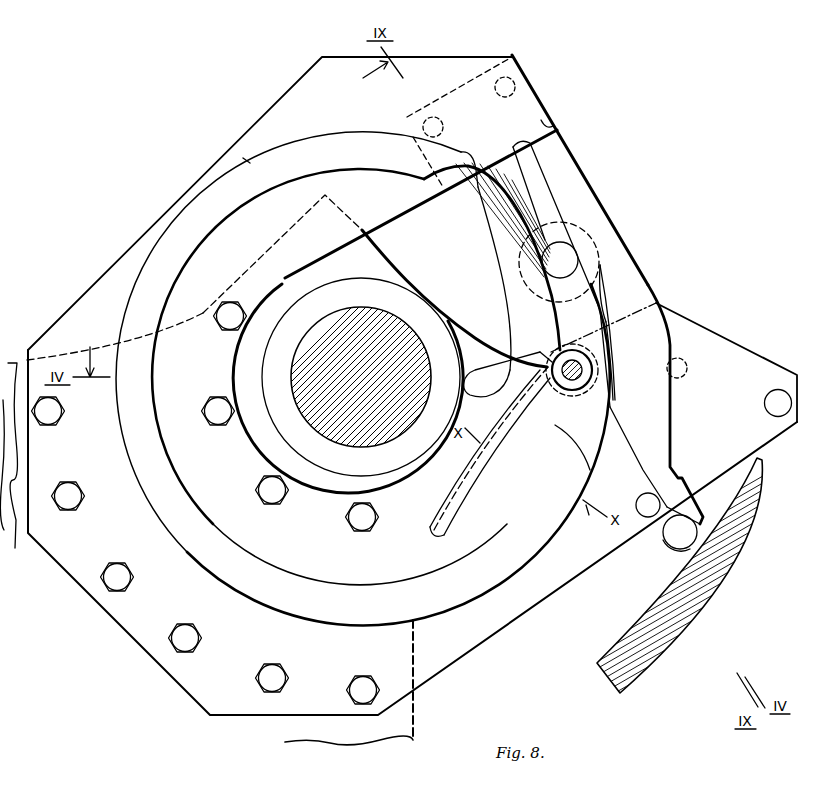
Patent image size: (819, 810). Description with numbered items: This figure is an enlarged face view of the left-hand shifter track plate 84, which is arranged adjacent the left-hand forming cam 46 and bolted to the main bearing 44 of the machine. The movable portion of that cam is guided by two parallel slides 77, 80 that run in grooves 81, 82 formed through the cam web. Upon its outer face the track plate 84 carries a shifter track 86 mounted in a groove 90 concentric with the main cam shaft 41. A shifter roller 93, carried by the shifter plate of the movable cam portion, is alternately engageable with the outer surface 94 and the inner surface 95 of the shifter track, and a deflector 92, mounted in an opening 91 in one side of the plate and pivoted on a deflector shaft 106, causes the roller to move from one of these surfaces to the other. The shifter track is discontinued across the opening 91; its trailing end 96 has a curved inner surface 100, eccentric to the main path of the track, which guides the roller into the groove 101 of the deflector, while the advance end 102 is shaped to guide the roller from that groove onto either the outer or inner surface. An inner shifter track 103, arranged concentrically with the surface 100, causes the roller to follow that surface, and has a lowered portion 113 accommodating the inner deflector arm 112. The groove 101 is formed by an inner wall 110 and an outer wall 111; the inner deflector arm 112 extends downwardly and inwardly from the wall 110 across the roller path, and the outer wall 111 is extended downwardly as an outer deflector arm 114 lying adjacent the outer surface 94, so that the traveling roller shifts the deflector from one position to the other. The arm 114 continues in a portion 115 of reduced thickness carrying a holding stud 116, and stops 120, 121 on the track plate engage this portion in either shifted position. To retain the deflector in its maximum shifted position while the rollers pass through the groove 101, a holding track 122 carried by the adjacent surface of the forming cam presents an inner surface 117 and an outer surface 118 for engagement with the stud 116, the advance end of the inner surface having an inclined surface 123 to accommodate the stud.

The main cam shaft 41 is at (365, 308).
The main bearing 44 is at (362, 250).
The left-hand forming cam 46 is at (13, 377).
The slide 77 is at (9, 497).
The slide 80 is at (0, 322).
The groove 81 is at (9, 518).
The groove 82 is at (0, 302).
The track plate 84 is at (262, 120).
The shifter track 86 is at (193, 207).
The groove 90 is at (415, 172).
The opening 91 is at (547, 125).
The deflector 92 is at (618, 217).
The shifter roller 93 is at (580, 365).
The outer surface 94 is at (243, 158).
The inner surface 95 is at (233, 205).
The trailing end 96 is at (610, 385).
The curved inner surface 100 is at (580, 458).
The groove 101 is at (583, 278).
The advance end 102 is at (457, 155).
The inner shifter track 103 is at (493, 470).
The deflector shaft 106 is at (563, 260).
The inner wall 110 is at (487, 225).
The outer wall 111 is at (578, 202).
The inner deflector arm 112 is at (480, 377).
The portion 113 is at (520, 420).
The outer deflector arm 114 is at (660, 425).
The portion of reduced thickness 115 is at (672, 462).
The holding stud 116 is at (678, 540).
The inner surface 117 is at (645, 615).
The outer surface 118 is at (705, 605).
The stop 120 is at (642, 497).
The stop 121 is at (776, 398).
The holding track 122 is at (676, 590).
The inclined surface 123 is at (720, 490).